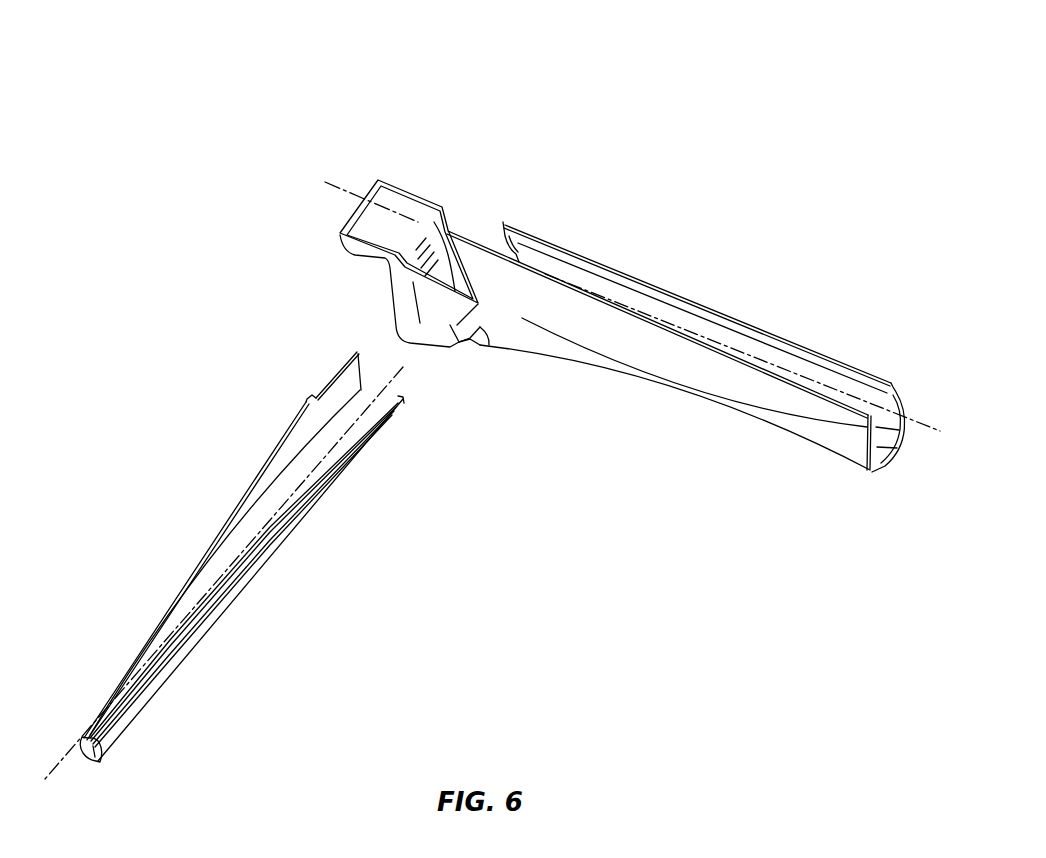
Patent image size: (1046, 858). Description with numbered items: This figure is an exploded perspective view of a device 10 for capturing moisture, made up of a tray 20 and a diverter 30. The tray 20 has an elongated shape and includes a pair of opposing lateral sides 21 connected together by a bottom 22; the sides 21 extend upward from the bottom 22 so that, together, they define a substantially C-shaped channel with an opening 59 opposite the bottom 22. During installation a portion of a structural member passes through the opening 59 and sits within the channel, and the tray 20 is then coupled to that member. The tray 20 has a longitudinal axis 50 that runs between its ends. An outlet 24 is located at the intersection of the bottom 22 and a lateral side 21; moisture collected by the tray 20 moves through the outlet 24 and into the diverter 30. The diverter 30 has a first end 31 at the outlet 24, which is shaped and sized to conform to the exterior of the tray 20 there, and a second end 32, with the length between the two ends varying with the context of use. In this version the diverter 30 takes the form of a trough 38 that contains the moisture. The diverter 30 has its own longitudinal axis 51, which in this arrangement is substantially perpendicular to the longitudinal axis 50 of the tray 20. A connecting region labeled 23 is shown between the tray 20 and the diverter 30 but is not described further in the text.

The device 10 is at (455, 116).
The tray 20 is at (778, 336).
The lateral sides 21 is at (837, 363).
The bottom 22 is at (885, 448).
The connector channel 23 is at (453, 278).
The outlet 24 is at (457, 333).
The diverter 30 is at (240, 503).
The first end 31 is at (380, 412).
The second end 32 is at (98, 760).
The trough 38 is at (200, 593).
The longitudinal axis 50 is at (342, 185).
The longitudinal axis 51 is at (58, 773).
The opening 59 is at (602, 277).